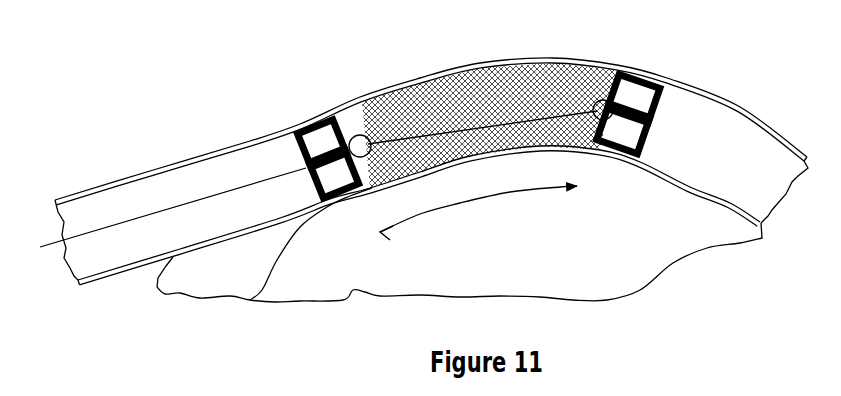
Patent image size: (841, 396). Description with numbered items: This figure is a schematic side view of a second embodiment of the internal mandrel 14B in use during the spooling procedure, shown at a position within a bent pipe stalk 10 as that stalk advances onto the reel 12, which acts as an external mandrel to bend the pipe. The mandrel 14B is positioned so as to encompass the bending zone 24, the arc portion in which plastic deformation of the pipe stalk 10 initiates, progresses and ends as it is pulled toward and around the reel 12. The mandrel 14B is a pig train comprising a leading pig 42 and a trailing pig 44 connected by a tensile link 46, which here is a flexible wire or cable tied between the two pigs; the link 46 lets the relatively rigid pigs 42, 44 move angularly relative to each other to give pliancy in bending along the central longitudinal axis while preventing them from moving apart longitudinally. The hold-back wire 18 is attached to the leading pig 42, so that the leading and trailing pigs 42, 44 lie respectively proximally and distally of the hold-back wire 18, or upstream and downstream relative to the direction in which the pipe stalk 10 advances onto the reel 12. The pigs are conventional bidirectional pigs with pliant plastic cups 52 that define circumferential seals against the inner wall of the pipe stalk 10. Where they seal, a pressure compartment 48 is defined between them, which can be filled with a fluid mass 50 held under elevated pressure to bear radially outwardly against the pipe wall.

The pipe stalk 10 is at (747, 120).
The reel 12 is at (622, 260).
The mandrel 14B is at (353, 73).
The hold-back wire 18 is at (153, 213).
The bending zone 24 is at (507, 193).
The leading pig 42 is at (318, 138).
The trailing pig 44 is at (640, 100).
The tensile link 46 is at (528, 112).
The pressure compartment 48 is at (437, 110).
The fluid mass 50 is at (487, 108).
The pliant plastic cups 52 is at (320, 207).